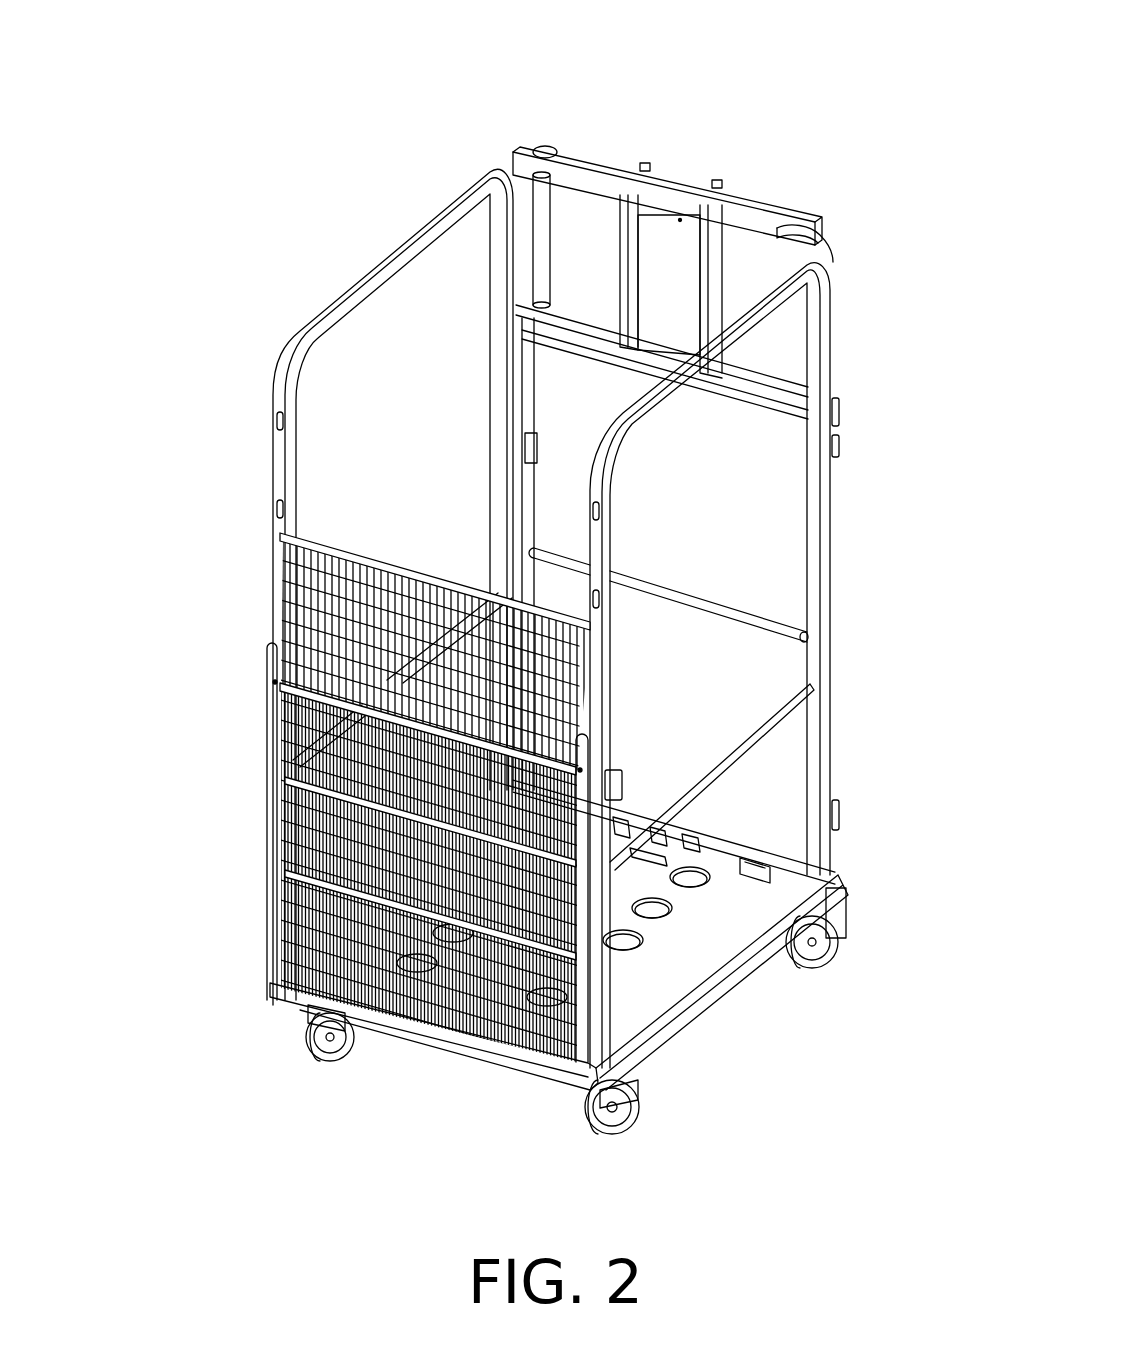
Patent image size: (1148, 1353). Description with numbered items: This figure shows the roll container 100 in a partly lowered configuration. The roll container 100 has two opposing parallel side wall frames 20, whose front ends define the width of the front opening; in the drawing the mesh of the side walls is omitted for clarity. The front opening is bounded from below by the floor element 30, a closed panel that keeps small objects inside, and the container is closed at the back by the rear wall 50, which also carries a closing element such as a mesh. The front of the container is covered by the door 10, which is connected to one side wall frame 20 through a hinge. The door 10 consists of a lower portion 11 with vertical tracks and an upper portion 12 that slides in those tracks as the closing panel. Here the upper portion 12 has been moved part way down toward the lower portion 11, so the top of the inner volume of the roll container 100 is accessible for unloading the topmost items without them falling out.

The roll container 100 is at (398, 211).
The side wall frame 20 is at (362, 282).
The rear wall 50 is at (733, 213).
The door 10 is at (250, 755).
The upper portion 12 is at (297, 633).
The lower portion 11 is at (272, 905).
The floor element 30 is at (693, 937).